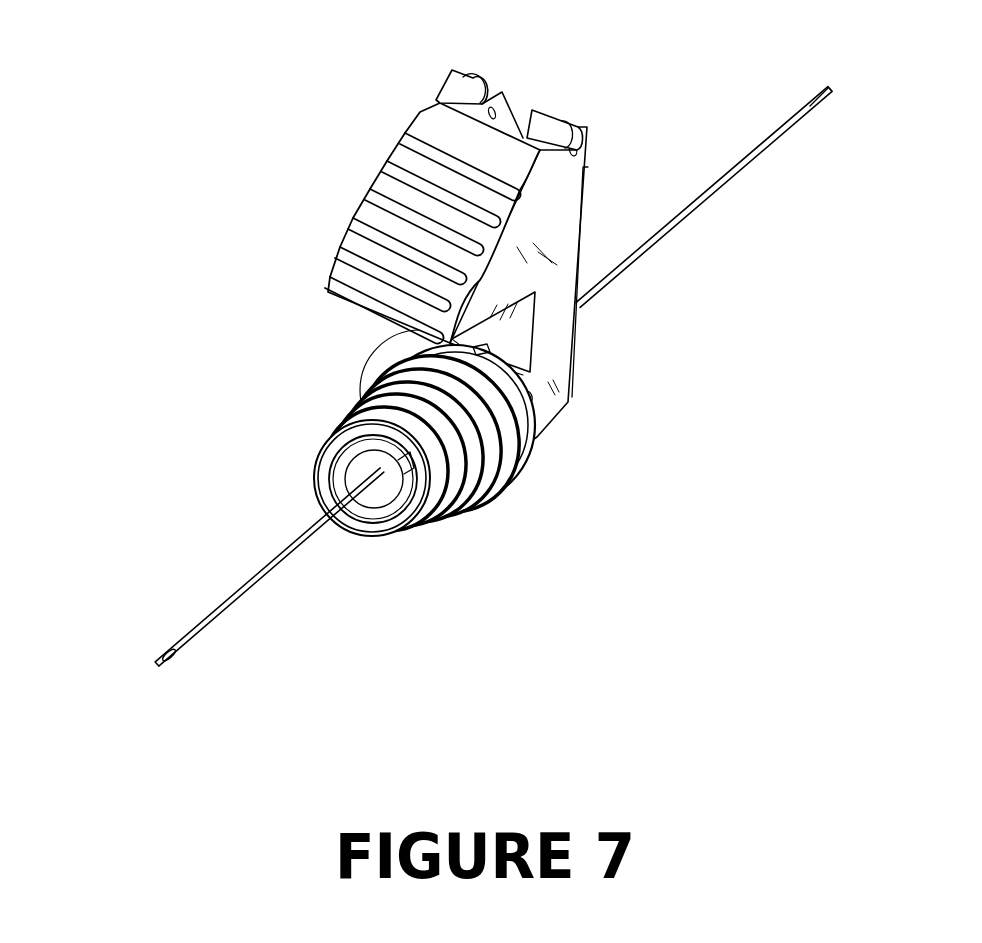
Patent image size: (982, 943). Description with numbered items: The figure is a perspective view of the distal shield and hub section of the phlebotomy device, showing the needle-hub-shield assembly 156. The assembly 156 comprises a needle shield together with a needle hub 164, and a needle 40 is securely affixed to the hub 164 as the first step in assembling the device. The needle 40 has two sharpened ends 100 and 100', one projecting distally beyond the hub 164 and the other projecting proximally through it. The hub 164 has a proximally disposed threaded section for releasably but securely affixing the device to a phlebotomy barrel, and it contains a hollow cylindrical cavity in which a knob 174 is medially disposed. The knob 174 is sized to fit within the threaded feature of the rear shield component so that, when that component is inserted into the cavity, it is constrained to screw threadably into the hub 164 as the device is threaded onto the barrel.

The needle 40 is at (630, 260).
The sharpened end 100 is at (879, 161).
The sharpened end 100' is at (192, 567).
The needle-hub-shield assembly 156 is at (457, 140).
The needle hub 164 is at (377, 347).
The knob 174 is at (350, 527).